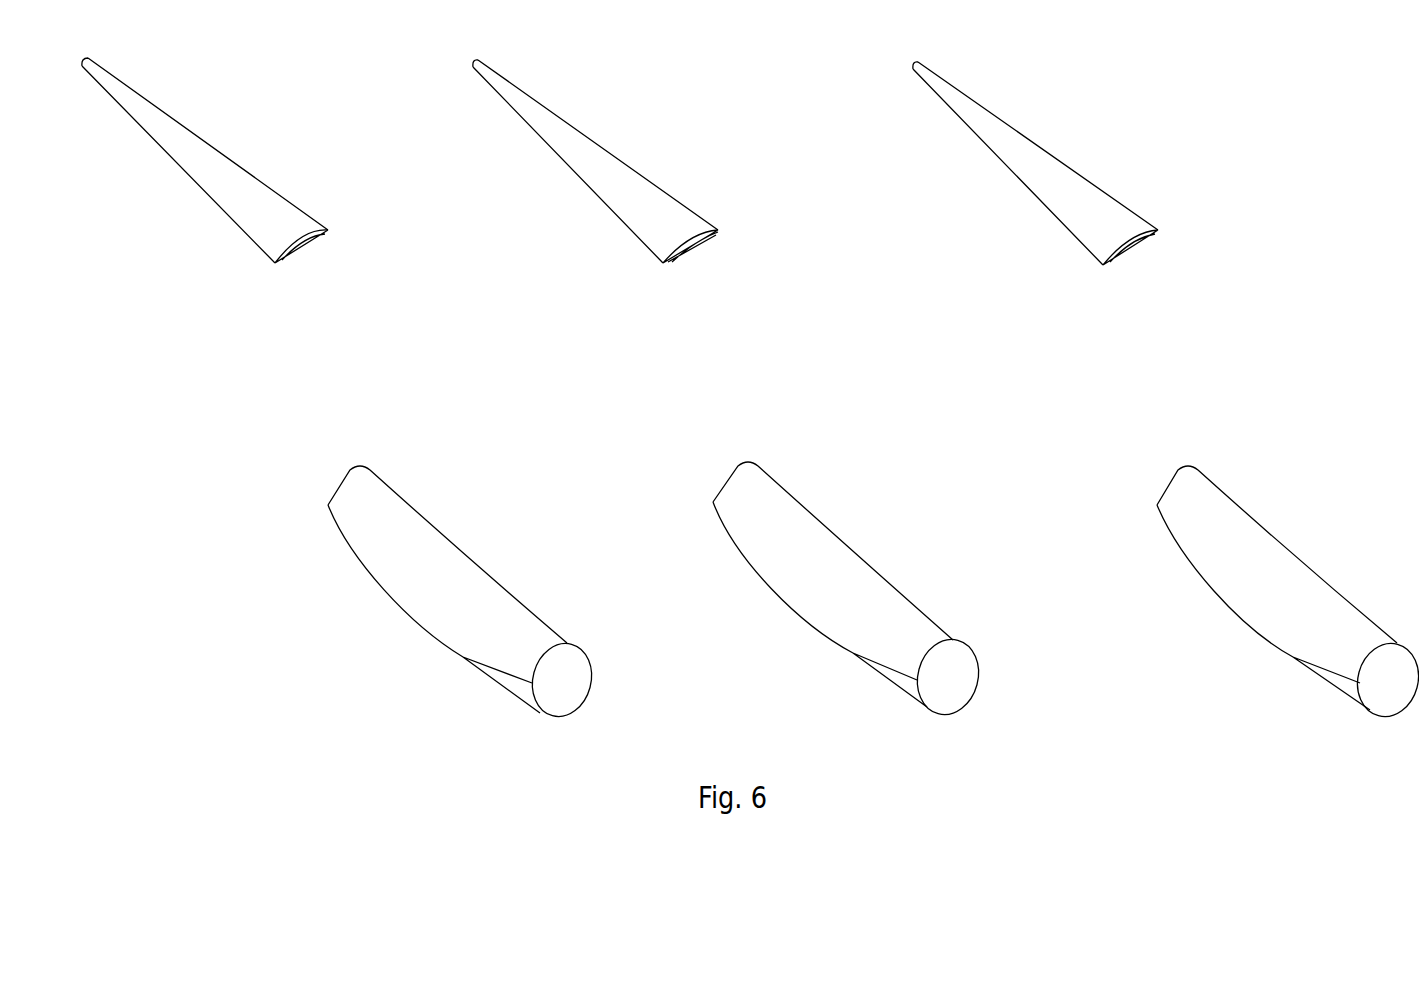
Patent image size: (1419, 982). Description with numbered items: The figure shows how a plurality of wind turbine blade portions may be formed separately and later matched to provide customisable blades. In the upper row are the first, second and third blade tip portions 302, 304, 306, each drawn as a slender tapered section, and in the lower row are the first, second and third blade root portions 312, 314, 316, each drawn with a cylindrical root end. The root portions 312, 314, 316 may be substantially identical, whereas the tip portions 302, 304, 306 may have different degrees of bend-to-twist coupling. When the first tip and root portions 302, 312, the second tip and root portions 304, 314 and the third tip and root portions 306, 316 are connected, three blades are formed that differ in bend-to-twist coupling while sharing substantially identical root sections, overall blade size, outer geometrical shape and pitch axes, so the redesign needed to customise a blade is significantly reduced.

The first blade tip portion 302 is at (296, 187).
The second blade tip portion 304 is at (690, 185).
The third blade tip portion 306 is at (1130, 190).
The first blade root portion 312 is at (365, 592).
The second blade root portion 314 is at (748, 590).
The third blade root portion 316 is at (1178, 592).